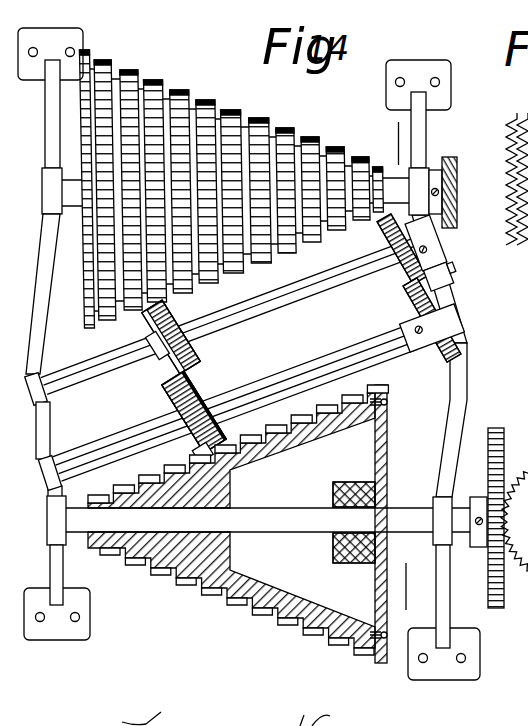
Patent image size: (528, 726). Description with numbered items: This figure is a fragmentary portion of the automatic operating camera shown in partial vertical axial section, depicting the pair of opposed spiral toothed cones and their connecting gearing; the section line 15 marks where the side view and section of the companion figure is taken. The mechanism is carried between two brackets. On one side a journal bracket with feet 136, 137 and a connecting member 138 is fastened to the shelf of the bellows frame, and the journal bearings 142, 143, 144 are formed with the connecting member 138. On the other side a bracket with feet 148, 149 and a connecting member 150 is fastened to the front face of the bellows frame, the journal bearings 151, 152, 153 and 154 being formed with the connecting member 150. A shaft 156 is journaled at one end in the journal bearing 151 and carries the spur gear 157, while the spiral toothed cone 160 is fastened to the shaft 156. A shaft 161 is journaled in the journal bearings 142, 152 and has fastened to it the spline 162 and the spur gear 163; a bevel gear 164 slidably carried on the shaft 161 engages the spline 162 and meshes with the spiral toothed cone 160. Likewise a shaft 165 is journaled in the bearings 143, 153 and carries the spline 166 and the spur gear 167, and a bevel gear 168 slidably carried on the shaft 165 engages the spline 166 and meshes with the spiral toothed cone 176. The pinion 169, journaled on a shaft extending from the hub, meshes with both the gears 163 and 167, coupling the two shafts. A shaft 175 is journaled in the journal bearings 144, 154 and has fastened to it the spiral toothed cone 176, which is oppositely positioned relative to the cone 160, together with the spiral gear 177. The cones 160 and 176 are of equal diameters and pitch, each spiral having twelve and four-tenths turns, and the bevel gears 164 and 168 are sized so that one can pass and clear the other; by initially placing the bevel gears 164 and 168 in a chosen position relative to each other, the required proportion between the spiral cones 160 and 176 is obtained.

The section line 15 15 is at (398, 133).
The foot 136 is at (446, 75).
The foot 137 is at (468, 658).
The connecting member 138 is at (469, 378).
The journal bearing 142 is at (459, 327).
The journal bearing 143 is at (437, 250).
The journal bearing 144 is at (424, 178).
The foot 148 is at (78, 34).
The foot 149 is at (87, 615).
The connecting member 150 is at (47, 297).
The journal bearing 151 is at (48, 508).
The journal bearing 152 is at (43, 465).
The journal bearing 153 is at (38, 410).
The journal bearing 154 is at (43, 180).
The shaft 156 is at (282, 530).
The spur gear 157 is at (510, 416).
The spiral toothed cone 160 is at (238, 600).
The shaft 161 is at (336, 358).
The spline 162 is at (265, 391).
The spur gear 163 is at (451, 363).
The bevel gear 164 is at (195, 390).
The shaft 165 is at (300, 290).
The spline 166 is at (212, 322).
The spur gear 167 is at (392, 231).
The bevel gear 168 is at (170, 367).
The pinion 169 is at (412, 297).
The shaft 175 is at (75, 178).
The spiral toothed cone 176 is at (205, 104).
The spiral gear 177 is at (455, 226).